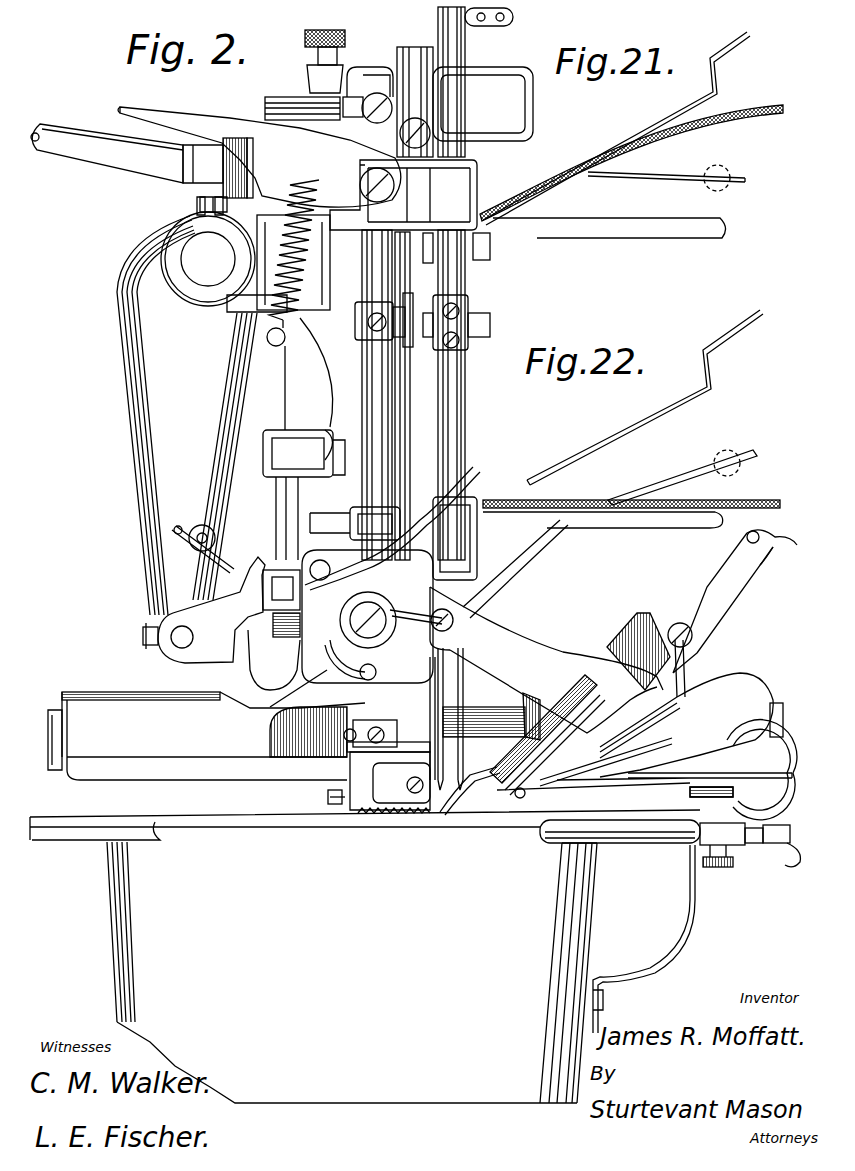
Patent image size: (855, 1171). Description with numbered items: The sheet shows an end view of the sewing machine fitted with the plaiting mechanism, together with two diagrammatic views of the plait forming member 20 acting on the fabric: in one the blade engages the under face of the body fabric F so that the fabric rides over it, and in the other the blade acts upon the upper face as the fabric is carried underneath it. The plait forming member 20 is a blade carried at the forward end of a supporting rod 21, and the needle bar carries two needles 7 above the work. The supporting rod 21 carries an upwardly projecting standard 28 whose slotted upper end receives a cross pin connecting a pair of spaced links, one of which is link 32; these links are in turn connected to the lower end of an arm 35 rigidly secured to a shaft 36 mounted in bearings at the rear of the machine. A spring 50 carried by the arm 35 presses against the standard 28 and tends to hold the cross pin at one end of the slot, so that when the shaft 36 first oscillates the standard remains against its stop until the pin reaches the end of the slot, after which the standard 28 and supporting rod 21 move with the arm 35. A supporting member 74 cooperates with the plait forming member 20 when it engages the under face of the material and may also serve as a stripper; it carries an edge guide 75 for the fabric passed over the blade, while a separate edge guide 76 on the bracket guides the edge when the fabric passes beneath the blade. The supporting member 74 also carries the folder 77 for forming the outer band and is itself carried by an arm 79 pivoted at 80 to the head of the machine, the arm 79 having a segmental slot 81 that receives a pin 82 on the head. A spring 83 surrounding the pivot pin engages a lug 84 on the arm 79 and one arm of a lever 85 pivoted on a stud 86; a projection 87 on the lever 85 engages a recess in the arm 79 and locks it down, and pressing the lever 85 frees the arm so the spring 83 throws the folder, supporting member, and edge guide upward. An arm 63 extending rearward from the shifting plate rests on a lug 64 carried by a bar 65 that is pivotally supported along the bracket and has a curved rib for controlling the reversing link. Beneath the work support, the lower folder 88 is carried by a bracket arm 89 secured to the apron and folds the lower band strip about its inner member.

In FIG. 2, the shaft 36 is at (208, 259).
In FIG. 2, the arm 35 is at (187, 415).
In FIG. 2, the spring 50 is at (218, 562).
In FIG. 2, the link 32 is at (204, 610).
In FIG. 2, the standard 28 is at (274, 630).
In FIG. 2, the segmental slot 81 is at (286, 703).
In FIG. 2, the pivot 80 is at (350, 620).
In FIG. 2, the pin 82 is at (375, 662).
In FIG. 2, the spring 83 is at (421, 610).
In FIG. 2, the lug 84 is at (448, 618).
In FIG. 2, the lever 85 is at (455, 512).
In FIG. 2, the stud 86 is at (362, 520).
In FIG. 2, the projection 87 is at (320, 560).
In FIG. 2, the arm 79 is at (540, 665).
In FIG. 2, the folder 77 is at (643, 635).
In FIG. 2, the edge guide 75 is at (740, 688).
In FIG. 2, the supporting member 74 is at (573, 741).
In FIG. 21, the supporting member 74 is at (568, 172).
In FIG. 22, the supporting member 74 is at (565, 470).
In FIG. 2, the supporting rod 21 is at (498, 725).
In FIG. 2, the needles 7 is at (475, 728).
In FIG. 2, the plait forming member 20 is at (678, 770).
In FIG. 21, the plait forming member 20 is at (652, 172).
In FIG. 22, the plait forming member 20 is at (672, 482).
In FIG. 2, the edge guide 76 is at (545, 793).
In FIG. 2, the arm 63 is at (350, 780).
In FIG. 2, the lug 64 is at (330, 805).
In FIG. 2, the bar 65 is at (365, 956).
In FIG. 2, the lower folder 88 is at (722, 835).
In FIG. 2, the bracket arm 89 is at (692, 925).
In FIG. 21, the body fabric F is at (765, 116).
In FIG. 22, the body fabric F is at (765, 500).